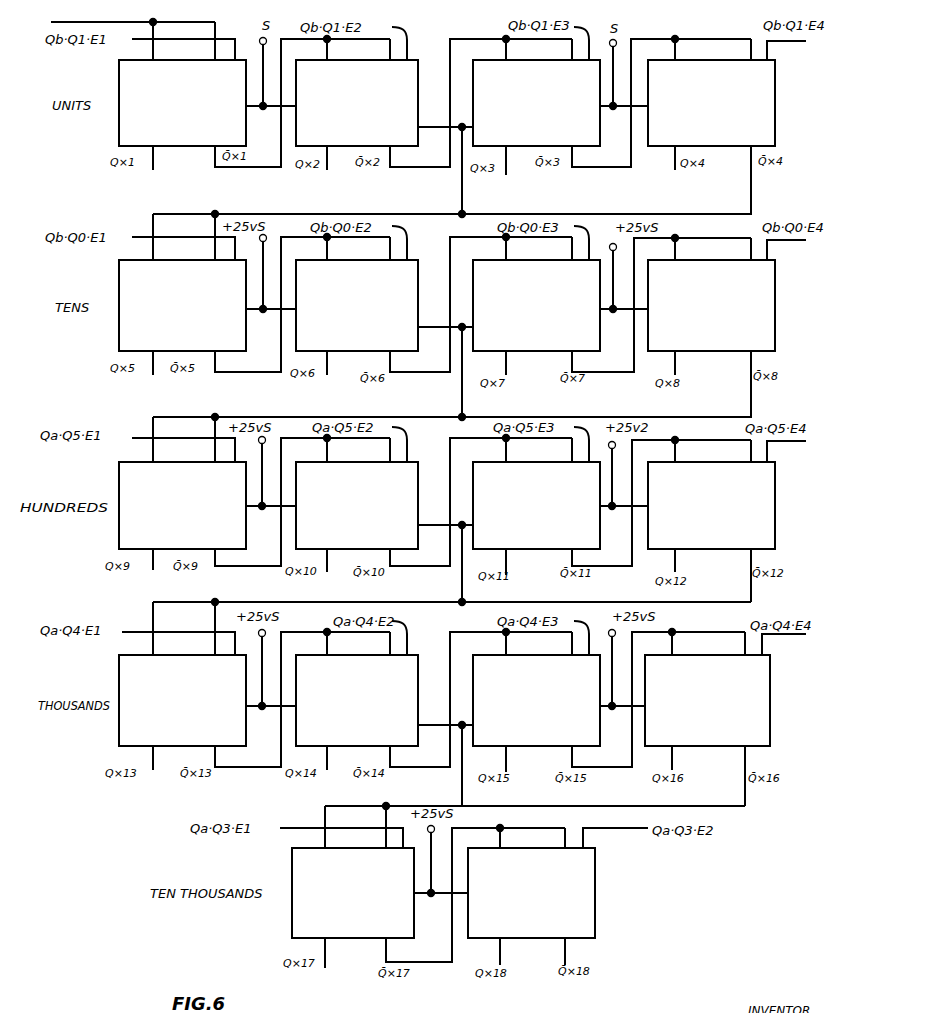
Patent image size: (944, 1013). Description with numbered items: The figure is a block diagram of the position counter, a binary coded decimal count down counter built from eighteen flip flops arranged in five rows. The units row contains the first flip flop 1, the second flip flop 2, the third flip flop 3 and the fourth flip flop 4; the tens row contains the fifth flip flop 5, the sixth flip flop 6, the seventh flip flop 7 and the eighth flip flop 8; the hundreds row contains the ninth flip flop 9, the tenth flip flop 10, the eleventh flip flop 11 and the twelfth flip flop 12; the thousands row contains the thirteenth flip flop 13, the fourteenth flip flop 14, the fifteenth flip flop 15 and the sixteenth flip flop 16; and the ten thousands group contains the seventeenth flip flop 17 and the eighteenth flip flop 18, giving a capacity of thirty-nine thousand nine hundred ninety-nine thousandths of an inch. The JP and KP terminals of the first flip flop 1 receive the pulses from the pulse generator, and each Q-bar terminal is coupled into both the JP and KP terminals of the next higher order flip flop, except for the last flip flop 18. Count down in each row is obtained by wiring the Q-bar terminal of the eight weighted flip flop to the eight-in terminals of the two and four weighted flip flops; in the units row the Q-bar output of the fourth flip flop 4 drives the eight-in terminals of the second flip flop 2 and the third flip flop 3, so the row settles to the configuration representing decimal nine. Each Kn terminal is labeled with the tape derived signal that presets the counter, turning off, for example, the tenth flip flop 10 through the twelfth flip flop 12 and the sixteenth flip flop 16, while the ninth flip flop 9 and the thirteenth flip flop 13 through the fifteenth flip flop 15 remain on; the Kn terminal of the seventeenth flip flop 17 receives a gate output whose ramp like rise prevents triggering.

The flip flop FQx1 1 is at (182, 103).
The flip flop FQx2 2 is at (357, 103).
The flip flop FQx3 3 is at (536, 103).
The flip flop FQx4 4 is at (711, 103).
The flip flop FQx5 5 is at (182, 305).
The flip flop FQx6 6 is at (357, 305).
The flip flop FQx7 7 is at (536, 305).
The flip flop FQx8 8 is at (711, 305).
The flip flop FQx9 9 is at (182, 505).
The flip flop FQx10 10 is at (357, 505).
The flip flop FQx11 11 is at (536, 505).
The flip flop FQx12 12 is at (711, 505).
The flip flop FQx13 13 is at (182, 700).
The flip flop FQx14 14 is at (357, 700).
The flip flop FQx15 15 is at (536, 700).
The flip flop FQx16 16 is at (707, 700).
The flip flop FQx17 17 is at (353, 893).
The flip flop FQx18 18 is at (531, 893).